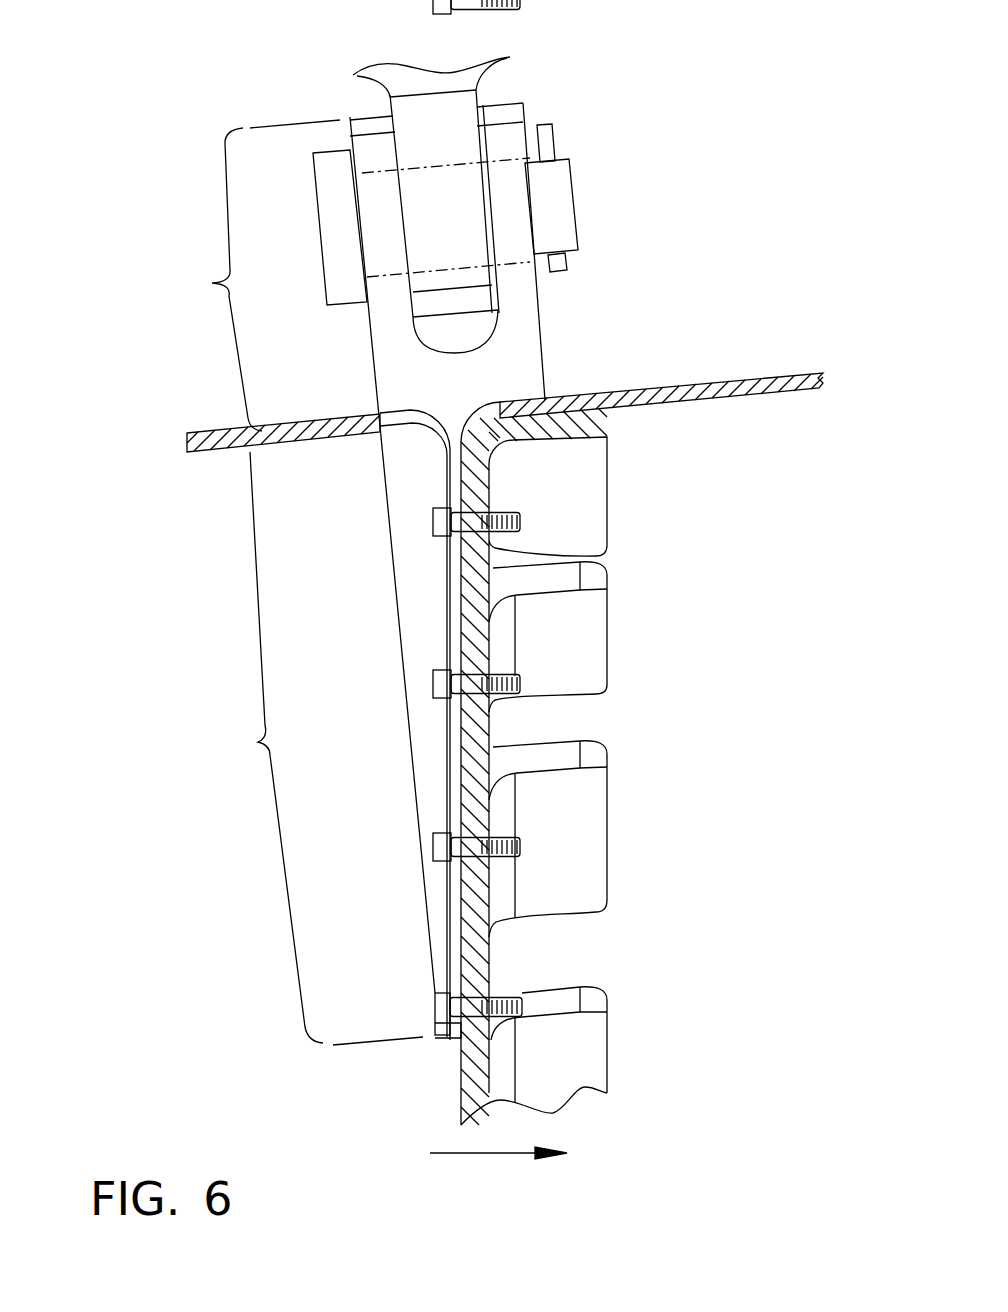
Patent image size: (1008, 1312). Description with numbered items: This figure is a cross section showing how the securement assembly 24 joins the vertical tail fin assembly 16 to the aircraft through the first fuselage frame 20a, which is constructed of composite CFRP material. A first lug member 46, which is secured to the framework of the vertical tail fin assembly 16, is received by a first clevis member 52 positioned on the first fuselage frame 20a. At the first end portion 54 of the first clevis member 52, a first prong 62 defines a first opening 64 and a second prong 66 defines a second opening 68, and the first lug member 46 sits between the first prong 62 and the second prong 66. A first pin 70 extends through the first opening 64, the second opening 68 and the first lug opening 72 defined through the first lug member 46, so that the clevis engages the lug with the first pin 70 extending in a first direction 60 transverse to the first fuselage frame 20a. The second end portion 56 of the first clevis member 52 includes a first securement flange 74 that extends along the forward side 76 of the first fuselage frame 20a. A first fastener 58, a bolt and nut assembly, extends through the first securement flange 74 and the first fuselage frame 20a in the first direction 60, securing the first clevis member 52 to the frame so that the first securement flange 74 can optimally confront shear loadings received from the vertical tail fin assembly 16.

The vertical tail fin assembly 16 is at (442, 26).
The securement assembly 24 is at (732, 108).
The first lug member 46 is at (440, 113).
The first clevis member 52 is at (575, 352).
The first end portion 54 is at (224, 275).
The second end portion 56 is at (262, 740).
The first fastener 58 is at (492, 533).
The first direction 60 is at (480, 1153).
The first prong 62 is at (370, 149).
The first opening 64 is at (375, 173).
The second prong 66 is at (497, 130).
The second opening 68 is at (500, 159).
The first pin 70 is at (548, 208).
The first lug opening 72 is at (420, 163).
The first securement flange 74 is at (457, 600).
The forward side 76 is at (467, 635).
The first fuselage frame 20a is at (507, 447).